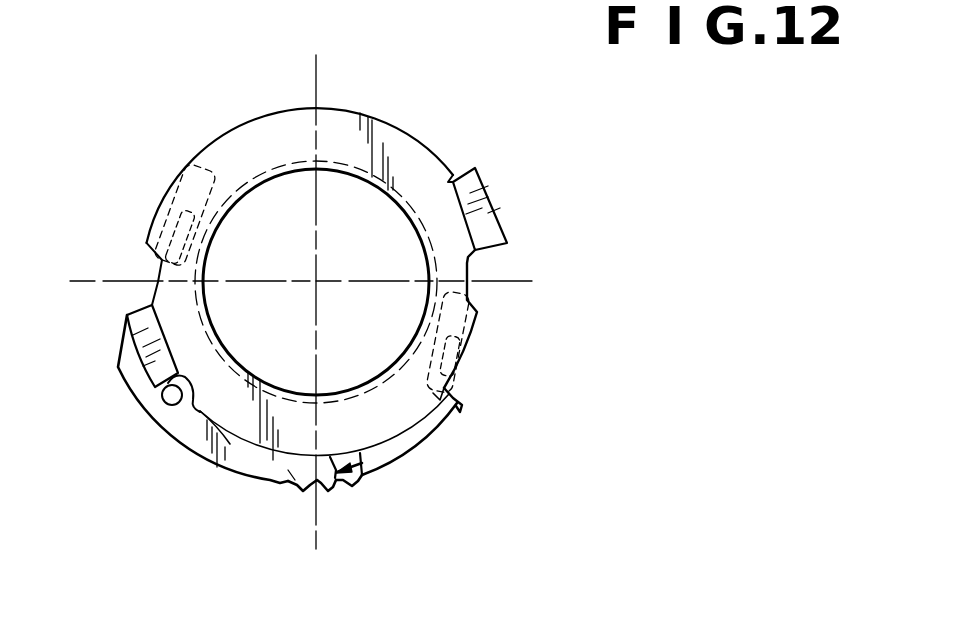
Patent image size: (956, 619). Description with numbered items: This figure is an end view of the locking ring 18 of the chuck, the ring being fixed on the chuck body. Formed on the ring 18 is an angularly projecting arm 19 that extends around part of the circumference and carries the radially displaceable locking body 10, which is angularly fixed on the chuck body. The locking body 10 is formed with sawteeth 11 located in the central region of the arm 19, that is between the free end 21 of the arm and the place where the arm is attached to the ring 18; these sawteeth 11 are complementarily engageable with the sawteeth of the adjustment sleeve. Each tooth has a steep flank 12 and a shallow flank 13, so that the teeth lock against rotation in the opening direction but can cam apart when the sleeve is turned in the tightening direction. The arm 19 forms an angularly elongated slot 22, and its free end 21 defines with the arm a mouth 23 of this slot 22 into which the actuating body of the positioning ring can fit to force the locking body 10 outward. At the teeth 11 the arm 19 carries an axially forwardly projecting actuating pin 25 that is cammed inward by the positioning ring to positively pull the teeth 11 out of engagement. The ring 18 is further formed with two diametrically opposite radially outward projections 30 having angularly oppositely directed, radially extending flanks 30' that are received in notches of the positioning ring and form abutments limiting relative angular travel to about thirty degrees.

The locking body 10 is at (237, 483).
The sawteeth 11 is at (324, 491).
The steep flank 12 is at (358, 477).
The shallow flank 13 is at (343, 486).
The ring 18 is at (398, 142).
The arm 19 is at (281, 491).
The free end 21 is at (465, 407).
The slot 22 is at (213, 460).
The mouth 23 is at (458, 386).
The actuating pin 25 is at (362, 464).
The radially outward projections 30 is at (316, 277).
The flanks 30' is at (349, 302).